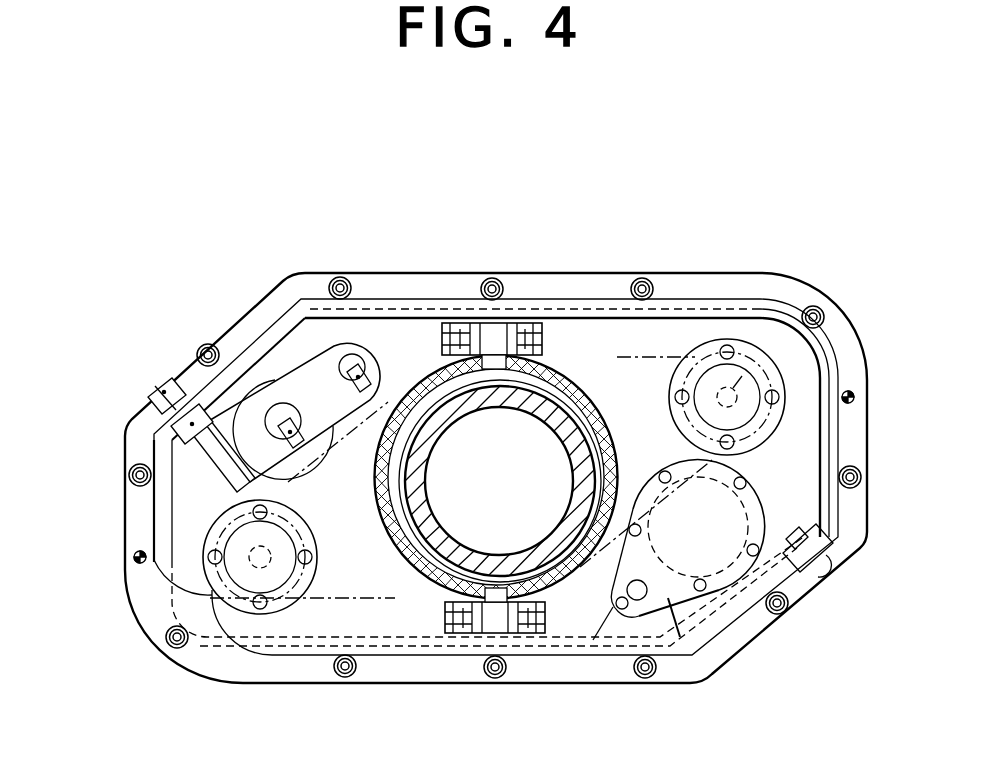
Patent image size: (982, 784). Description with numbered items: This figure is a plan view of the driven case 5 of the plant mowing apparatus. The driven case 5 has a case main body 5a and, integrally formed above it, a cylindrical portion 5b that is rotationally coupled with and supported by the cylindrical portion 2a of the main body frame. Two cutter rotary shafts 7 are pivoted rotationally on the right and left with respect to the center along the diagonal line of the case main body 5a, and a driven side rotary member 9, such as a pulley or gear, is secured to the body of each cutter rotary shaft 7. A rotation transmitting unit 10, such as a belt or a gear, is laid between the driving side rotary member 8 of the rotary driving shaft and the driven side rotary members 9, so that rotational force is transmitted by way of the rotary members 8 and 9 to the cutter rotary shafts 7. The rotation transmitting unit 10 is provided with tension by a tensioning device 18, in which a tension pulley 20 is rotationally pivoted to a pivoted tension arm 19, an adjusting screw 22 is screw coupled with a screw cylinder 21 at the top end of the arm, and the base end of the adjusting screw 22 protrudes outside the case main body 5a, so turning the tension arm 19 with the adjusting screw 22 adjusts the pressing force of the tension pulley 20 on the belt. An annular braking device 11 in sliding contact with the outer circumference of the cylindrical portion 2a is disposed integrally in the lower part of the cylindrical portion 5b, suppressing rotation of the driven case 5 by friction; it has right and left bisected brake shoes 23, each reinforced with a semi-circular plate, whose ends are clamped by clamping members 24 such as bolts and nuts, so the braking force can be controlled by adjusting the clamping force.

The driven case 5 is at (543, 258).
The case main body 5a is at (730, 280).
The cylindrical portion 5b is at (458, 413).
The cylindrical portion of the main body frame 2a is at (423, 388).
The cutter rotary shaft 7 is at (755, 357).
The driving side rotary member 8 is at (767, 380).
The driven side rotary member 9 is at (213, 579).
The rotation transmitting unit 10 is at (663, 354).
The annular braking device 11 is at (589, 389).
The tensioning device 18 is at (281, 365).
The tension arm 19 is at (316, 392).
The tension pulley 20 is at (258, 383).
The screw cylinder 21 is at (235, 478).
The adjusting screw 22 is at (197, 440).
The brake shoe 23 is at (557, 380).
The clamping member 24 is at (469, 325).